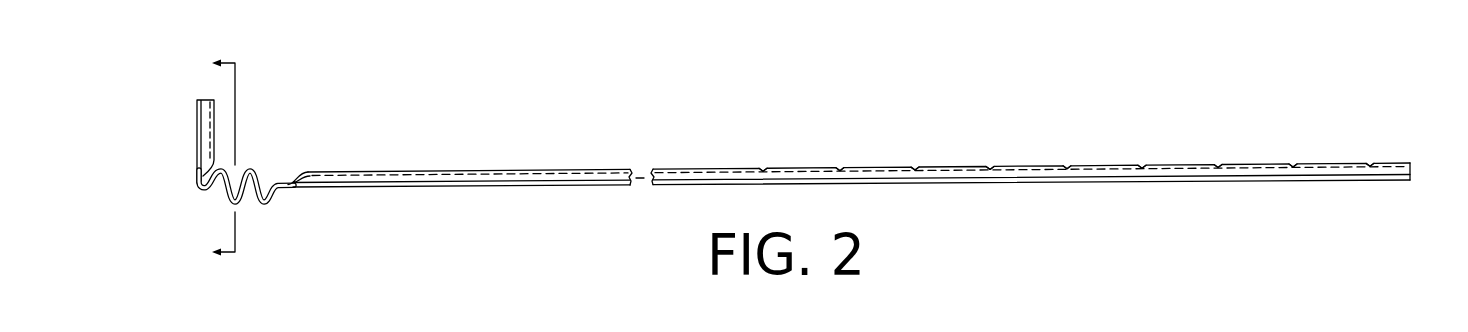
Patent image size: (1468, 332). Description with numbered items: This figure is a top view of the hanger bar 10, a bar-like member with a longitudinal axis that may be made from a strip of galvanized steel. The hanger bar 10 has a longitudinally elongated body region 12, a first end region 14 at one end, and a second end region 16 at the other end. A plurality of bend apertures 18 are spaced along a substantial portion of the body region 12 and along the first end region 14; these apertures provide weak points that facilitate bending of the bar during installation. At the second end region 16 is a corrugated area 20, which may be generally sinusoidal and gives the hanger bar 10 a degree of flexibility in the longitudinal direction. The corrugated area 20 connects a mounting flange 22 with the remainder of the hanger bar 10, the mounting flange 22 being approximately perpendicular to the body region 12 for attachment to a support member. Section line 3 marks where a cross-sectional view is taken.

The section line 3- 3 is at (212, 157).
The hanger bar 10 is at (796, 177).
The longitudinally elongated body region 12 is at (717, 153).
The first end region 14 is at (1257, 148).
The second end region 16 is at (232, 187).
The bend apertures 18 is at (1067, 163).
The corrugated area 20 is at (250, 213).
The mounting flange 22 is at (197, 136).